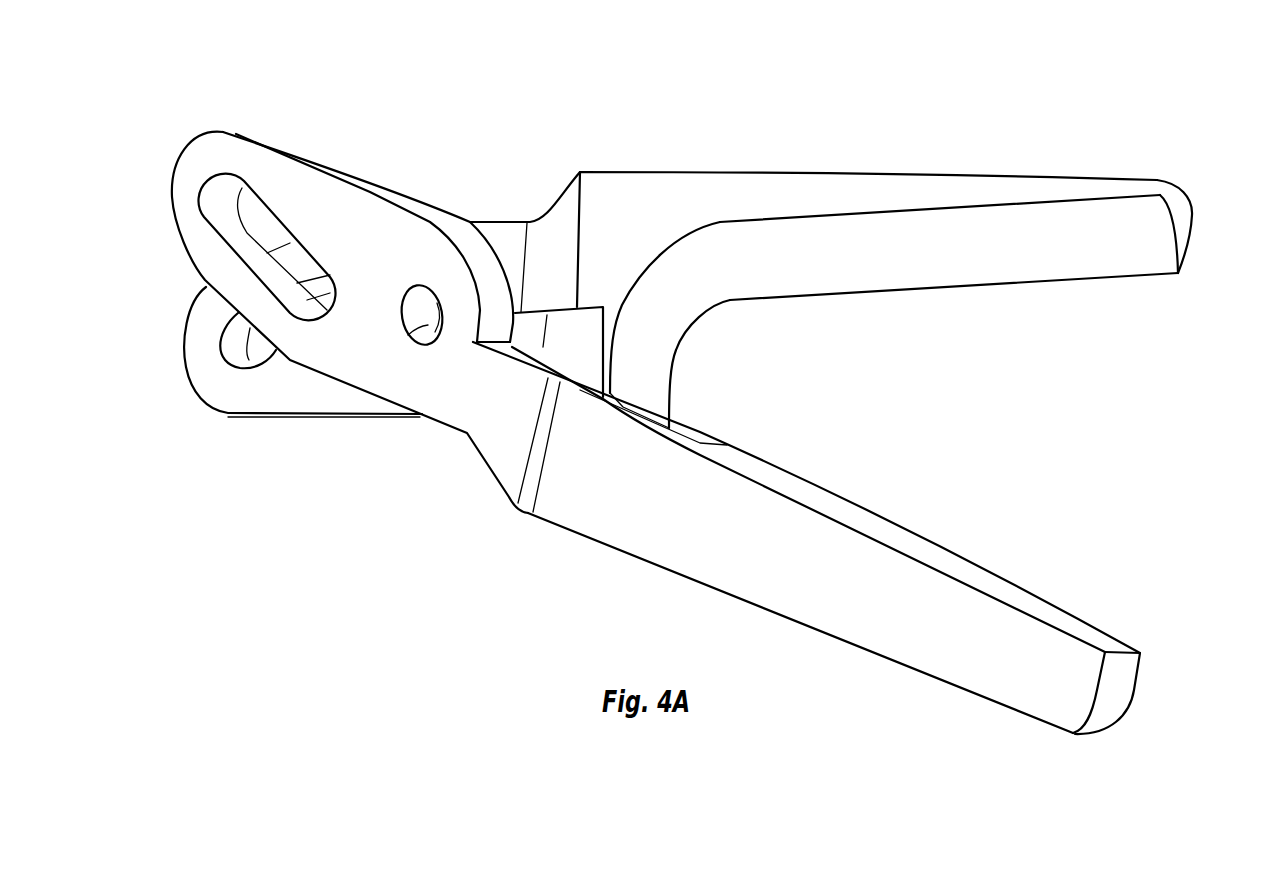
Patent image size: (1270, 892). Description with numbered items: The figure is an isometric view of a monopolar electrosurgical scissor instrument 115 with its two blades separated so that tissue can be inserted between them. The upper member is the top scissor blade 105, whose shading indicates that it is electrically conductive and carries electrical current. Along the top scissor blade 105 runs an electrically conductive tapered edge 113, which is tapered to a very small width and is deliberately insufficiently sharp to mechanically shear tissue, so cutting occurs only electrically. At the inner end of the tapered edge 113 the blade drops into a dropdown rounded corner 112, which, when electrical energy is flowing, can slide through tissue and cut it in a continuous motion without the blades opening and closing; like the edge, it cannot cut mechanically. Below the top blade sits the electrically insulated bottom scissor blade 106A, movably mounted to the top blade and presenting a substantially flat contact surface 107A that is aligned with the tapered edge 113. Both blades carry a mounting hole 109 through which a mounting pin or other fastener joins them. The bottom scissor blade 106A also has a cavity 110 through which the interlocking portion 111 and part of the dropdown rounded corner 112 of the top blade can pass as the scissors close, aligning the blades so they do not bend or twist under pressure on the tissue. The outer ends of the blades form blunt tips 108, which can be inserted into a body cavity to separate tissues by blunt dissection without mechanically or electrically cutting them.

The top scissor blade 105 is at (724, 171).
The bottom scissor blade 106A is at (577, 537).
The substantially flat contact surface 107A is at (890, 530).
The blunt tips 108 is at (1179, 235).
The mounting hole 109 is at (426, 325).
The cavity 110 is at (697, 443).
The interlocking portion 111 is at (680, 413).
The dropdown rounded corner 112 is at (683, 330).
The tapered edge 113 is at (962, 287).
The monopolar electrosurgical scissor instrument 115 is at (485, 150).